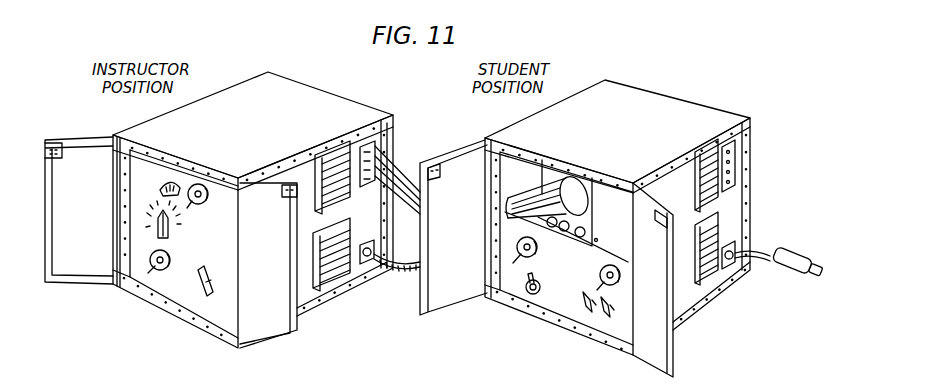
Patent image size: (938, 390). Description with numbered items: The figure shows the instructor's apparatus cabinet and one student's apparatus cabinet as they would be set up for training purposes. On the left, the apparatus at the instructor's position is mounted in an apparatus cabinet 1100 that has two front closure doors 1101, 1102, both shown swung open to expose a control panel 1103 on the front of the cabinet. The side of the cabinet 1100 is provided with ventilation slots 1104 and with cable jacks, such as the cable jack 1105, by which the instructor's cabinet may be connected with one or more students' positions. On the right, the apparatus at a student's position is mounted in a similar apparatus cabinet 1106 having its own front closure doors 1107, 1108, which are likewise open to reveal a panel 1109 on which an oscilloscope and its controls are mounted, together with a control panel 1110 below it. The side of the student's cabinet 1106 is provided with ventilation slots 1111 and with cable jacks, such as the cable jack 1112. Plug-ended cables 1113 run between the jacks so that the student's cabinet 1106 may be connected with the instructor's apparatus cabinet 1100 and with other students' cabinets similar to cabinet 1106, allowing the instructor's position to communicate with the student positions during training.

The apparatus cabinet 1100 is at (157, 120).
The front closure door 1101 is at (87, 270).
The front closure door 1102 is at (273, 322).
The control panel 1103 is at (147, 166).
The ventilation slots 1104 is at (333, 194).
The cable jack 1105 is at (386, 136).
The apparatus cabinet 1106 is at (699, 109).
The front closure door 1107 is at (437, 288).
The front closure door 1108 is at (660, 343).
The panel 1109 is at (612, 190).
The control panel 1110 is at (550, 302).
The ventilation slots 1111 is at (718, 200).
The cable jack 1112 is at (735, 167).
The plug-ended cables 1113 is at (413, 166).